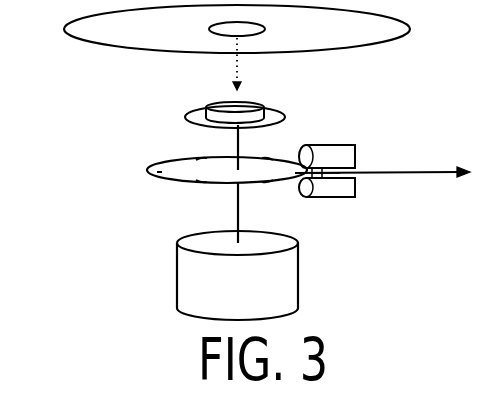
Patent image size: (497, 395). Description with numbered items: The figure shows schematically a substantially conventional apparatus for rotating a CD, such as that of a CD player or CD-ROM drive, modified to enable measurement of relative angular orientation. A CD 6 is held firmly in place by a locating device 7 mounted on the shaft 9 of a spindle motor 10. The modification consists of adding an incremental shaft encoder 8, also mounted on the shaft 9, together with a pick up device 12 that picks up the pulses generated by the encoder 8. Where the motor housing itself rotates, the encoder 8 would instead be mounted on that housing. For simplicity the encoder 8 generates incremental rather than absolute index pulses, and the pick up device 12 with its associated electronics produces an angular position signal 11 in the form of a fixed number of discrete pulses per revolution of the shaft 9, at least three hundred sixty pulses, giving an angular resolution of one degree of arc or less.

The CD 6 is at (60, 32).
The locating device 7 is at (187, 117).
The incremental shaft encoder 8 is at (145, 170).
The shaft 9 is at (230, 208).
The spindle motor 10 is at (172, 272).
The angular position signal 11 is at (408, 180).
The pick up device 12 is at (360, 152).